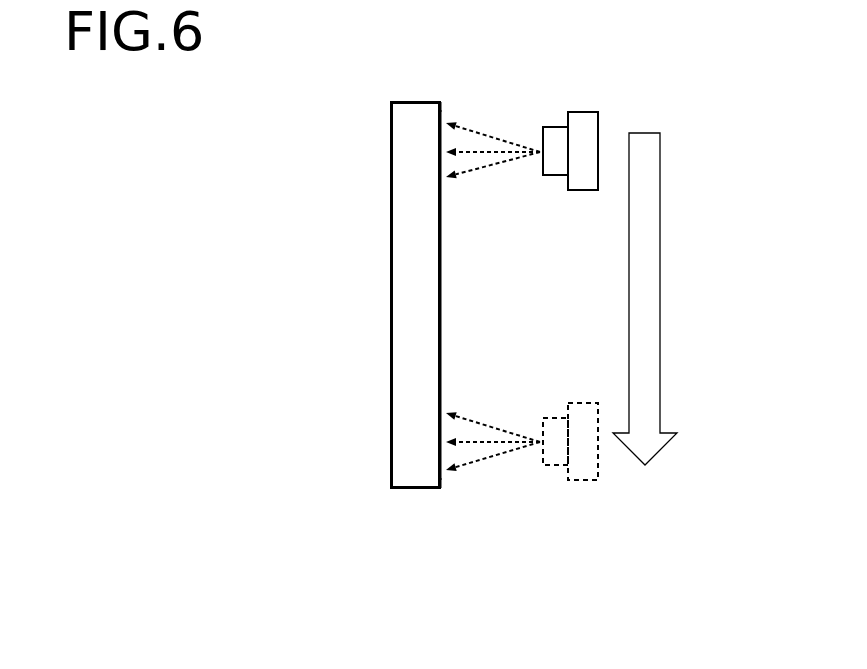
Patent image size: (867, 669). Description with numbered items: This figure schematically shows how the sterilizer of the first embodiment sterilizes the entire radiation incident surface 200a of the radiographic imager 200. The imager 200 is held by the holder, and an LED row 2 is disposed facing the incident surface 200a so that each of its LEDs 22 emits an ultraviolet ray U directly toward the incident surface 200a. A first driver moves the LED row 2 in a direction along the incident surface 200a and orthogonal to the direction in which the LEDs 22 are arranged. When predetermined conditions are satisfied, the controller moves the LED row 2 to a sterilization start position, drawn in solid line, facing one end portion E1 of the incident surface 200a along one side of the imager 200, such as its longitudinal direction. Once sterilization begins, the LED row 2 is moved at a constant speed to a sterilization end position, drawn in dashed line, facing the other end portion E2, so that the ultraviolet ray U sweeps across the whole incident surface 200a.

The imager 200 is at (390, 290).
The incident surface 200a is at (442, 302).
The LED 22 is at (551, 128).
The LED row 2 is at (593, 107).
The one end portion E1 is at (438, 72).
The other end portion E2 is at (438, 522).
The ultraviolet ray U is at (485, 133).